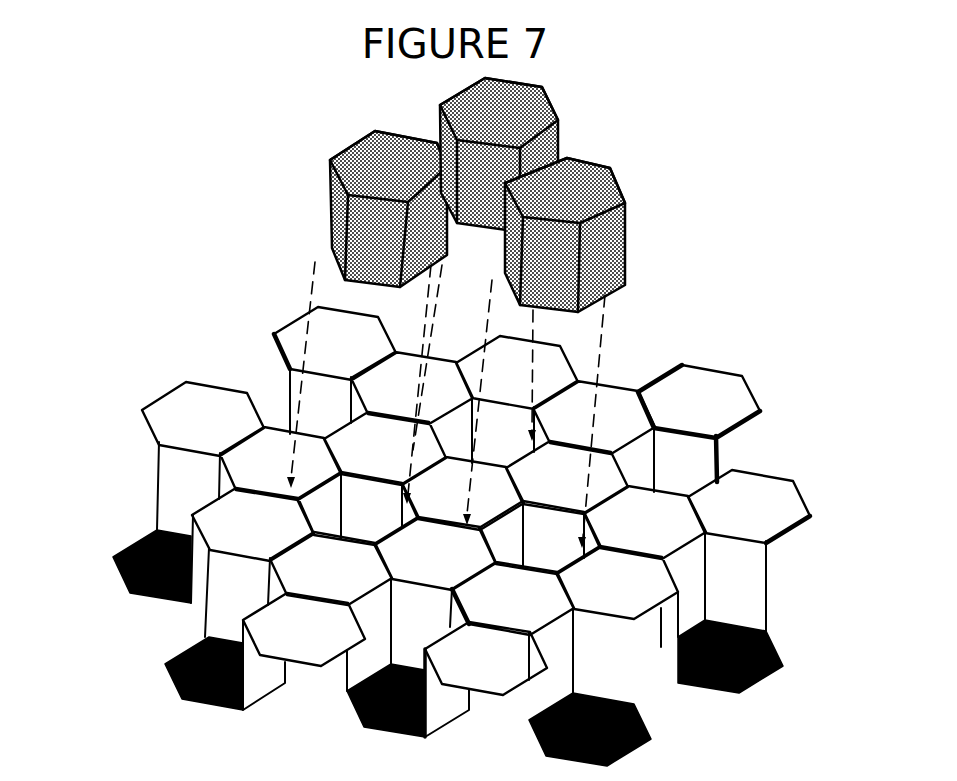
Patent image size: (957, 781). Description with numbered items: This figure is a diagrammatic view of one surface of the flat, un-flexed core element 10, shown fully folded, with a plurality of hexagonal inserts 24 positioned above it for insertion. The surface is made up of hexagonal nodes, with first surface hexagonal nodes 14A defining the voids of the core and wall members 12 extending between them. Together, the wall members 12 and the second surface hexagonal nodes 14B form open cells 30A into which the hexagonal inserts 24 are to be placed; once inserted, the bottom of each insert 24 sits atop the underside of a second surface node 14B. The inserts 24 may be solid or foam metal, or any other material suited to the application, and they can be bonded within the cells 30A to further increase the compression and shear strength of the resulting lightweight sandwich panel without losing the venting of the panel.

The core element 10 is at (168, 355).
The wall members 12 is at (183, 470).
The first surface hexagonal nodes 14A is at (323, 572).
The second surface hexagonal nodes 14B is at (355, 717).
The hexagonal inserts 24 is at (393, 168).
The open cells 30A is at (367, 492).